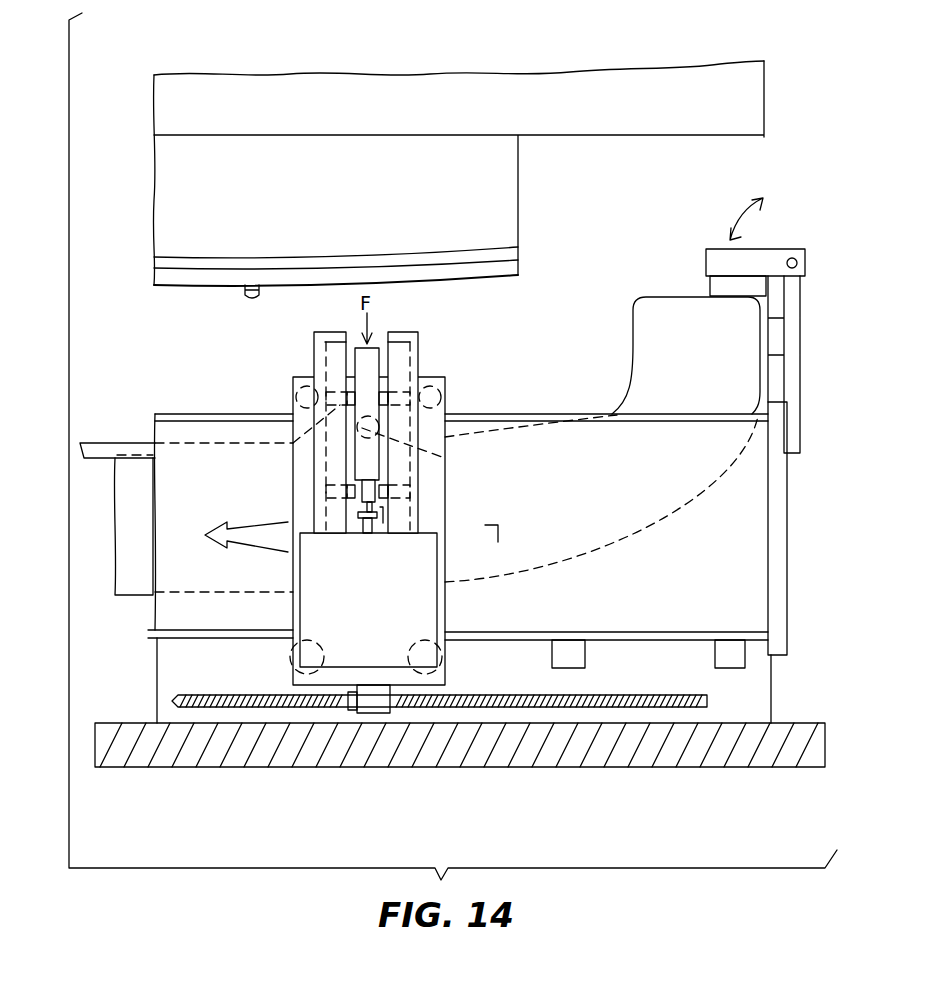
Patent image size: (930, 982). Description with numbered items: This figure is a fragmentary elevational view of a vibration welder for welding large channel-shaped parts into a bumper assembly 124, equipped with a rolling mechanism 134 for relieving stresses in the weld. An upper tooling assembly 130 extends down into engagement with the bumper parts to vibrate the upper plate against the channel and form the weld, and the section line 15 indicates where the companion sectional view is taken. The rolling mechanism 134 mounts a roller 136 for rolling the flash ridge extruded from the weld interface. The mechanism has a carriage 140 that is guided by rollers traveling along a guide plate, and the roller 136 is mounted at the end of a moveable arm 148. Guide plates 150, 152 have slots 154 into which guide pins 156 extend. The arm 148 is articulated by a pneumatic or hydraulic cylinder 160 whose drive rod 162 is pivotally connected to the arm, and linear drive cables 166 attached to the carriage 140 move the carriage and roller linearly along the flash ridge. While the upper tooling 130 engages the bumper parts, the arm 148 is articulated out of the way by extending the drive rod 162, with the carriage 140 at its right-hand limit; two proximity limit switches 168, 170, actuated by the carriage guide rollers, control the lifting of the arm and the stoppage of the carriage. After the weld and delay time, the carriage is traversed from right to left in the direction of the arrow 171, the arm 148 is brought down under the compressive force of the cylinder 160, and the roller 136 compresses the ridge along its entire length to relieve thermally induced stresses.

The section line 15- 15 is at (382, 62).
The bumper assembly 124 is at (633, 372).
The upper tooling assembly 130 is at (520, 197).
The rolling mechanism 134 is at (512, 303).
The roller 136 is at (445, 458).
The carriage 140 is at (448, 680).
The moveable arm 148 is at (365, 378).
The guide plate 150 is at (418, 353).
The guide plate 152 is at (314, 347).
The slots 154 is at (415, 332).
The guide pins 156 is at (340, 482).
The pneumatic or hydraulic cylinder 160 is at (437, 620).
The drive rod 162 is at (372, 527).
The linear drive cables 166 is at (222, 695).
The proximity limit switch 168 is at (585, 655).
The proximity limit switch 170 is at (715, 651).
The direction arrow 171 is at (260, 527).